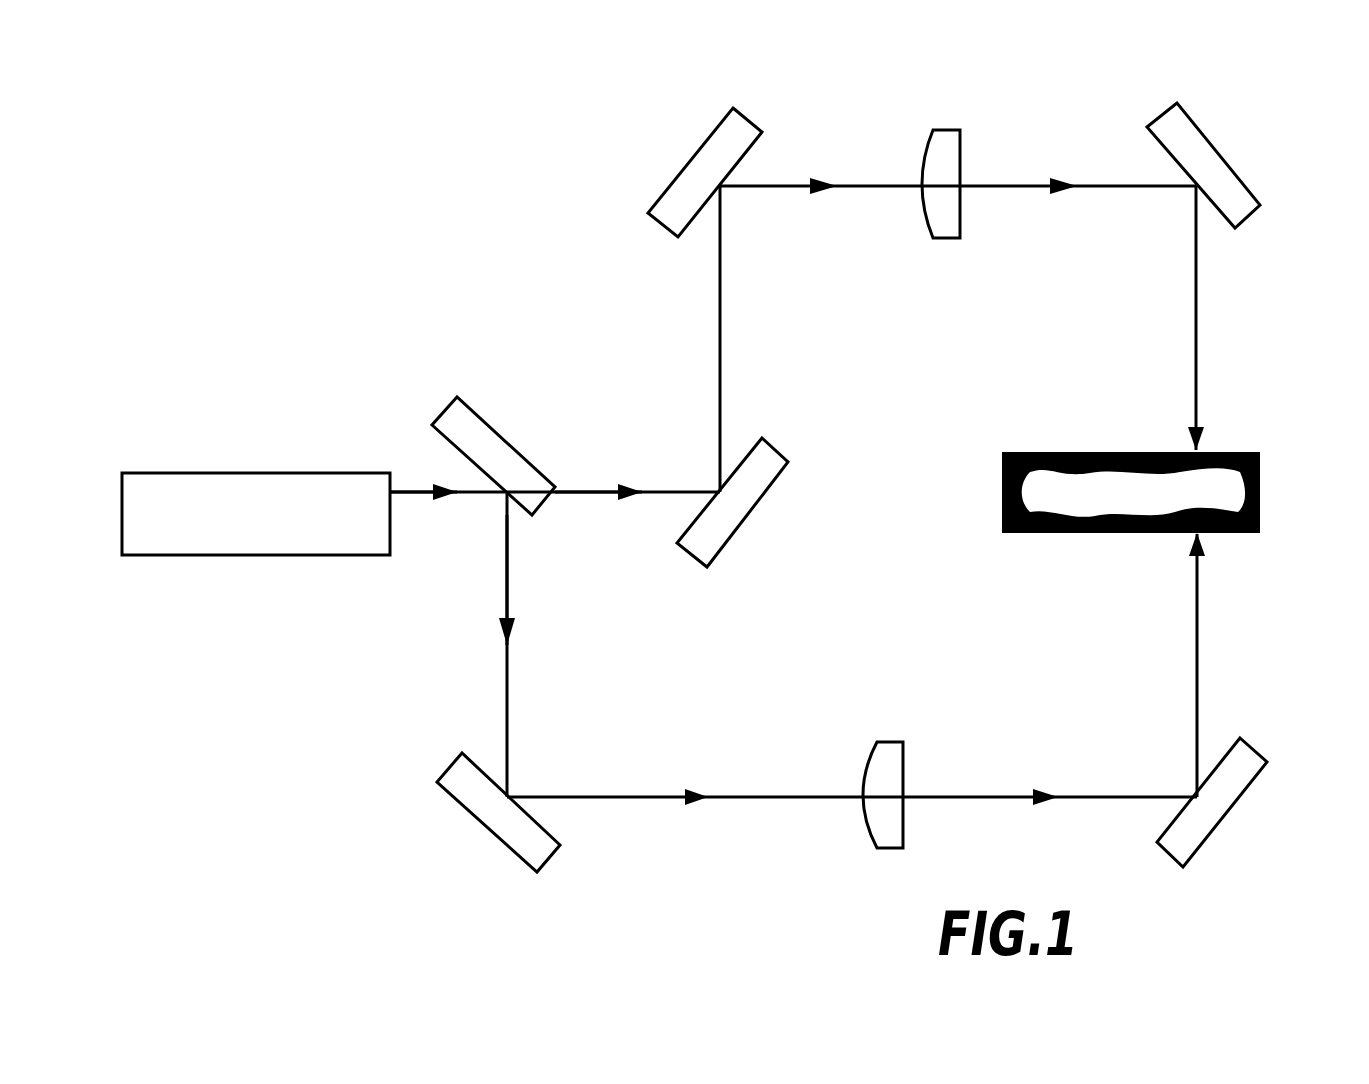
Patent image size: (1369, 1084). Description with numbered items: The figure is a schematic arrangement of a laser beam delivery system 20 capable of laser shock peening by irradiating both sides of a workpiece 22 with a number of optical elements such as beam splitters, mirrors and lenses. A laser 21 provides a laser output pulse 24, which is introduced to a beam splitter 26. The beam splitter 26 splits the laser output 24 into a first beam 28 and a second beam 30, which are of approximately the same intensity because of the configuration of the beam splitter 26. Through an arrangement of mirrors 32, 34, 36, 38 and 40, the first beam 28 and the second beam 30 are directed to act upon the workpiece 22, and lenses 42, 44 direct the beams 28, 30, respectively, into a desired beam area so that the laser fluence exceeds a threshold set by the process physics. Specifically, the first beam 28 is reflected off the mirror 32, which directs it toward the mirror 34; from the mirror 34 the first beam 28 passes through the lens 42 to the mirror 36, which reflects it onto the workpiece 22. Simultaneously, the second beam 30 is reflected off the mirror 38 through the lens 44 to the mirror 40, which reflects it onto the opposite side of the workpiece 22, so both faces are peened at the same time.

The system 20 is at (773, 890).
The laser 21 is at (318, 556).
The workpiece 22 is at (1140, 450).
The laser output pulse 24 is at (411, 490).
The beam splitter 26 is at (508, 438).
The first beam 28 is at (627, 490).
The second beam 30 is at (500, 632).
The mirror 32 is at (788, 462).
The mirror 34 is at (697, 152).
The mirror 36 is at (1225, 158).
The mirror 38 is at (484, 813).
The mirror 40 is at (1235, 802).
The lens 42 is at (950, 143).
The lens 44 is at (883, 762).